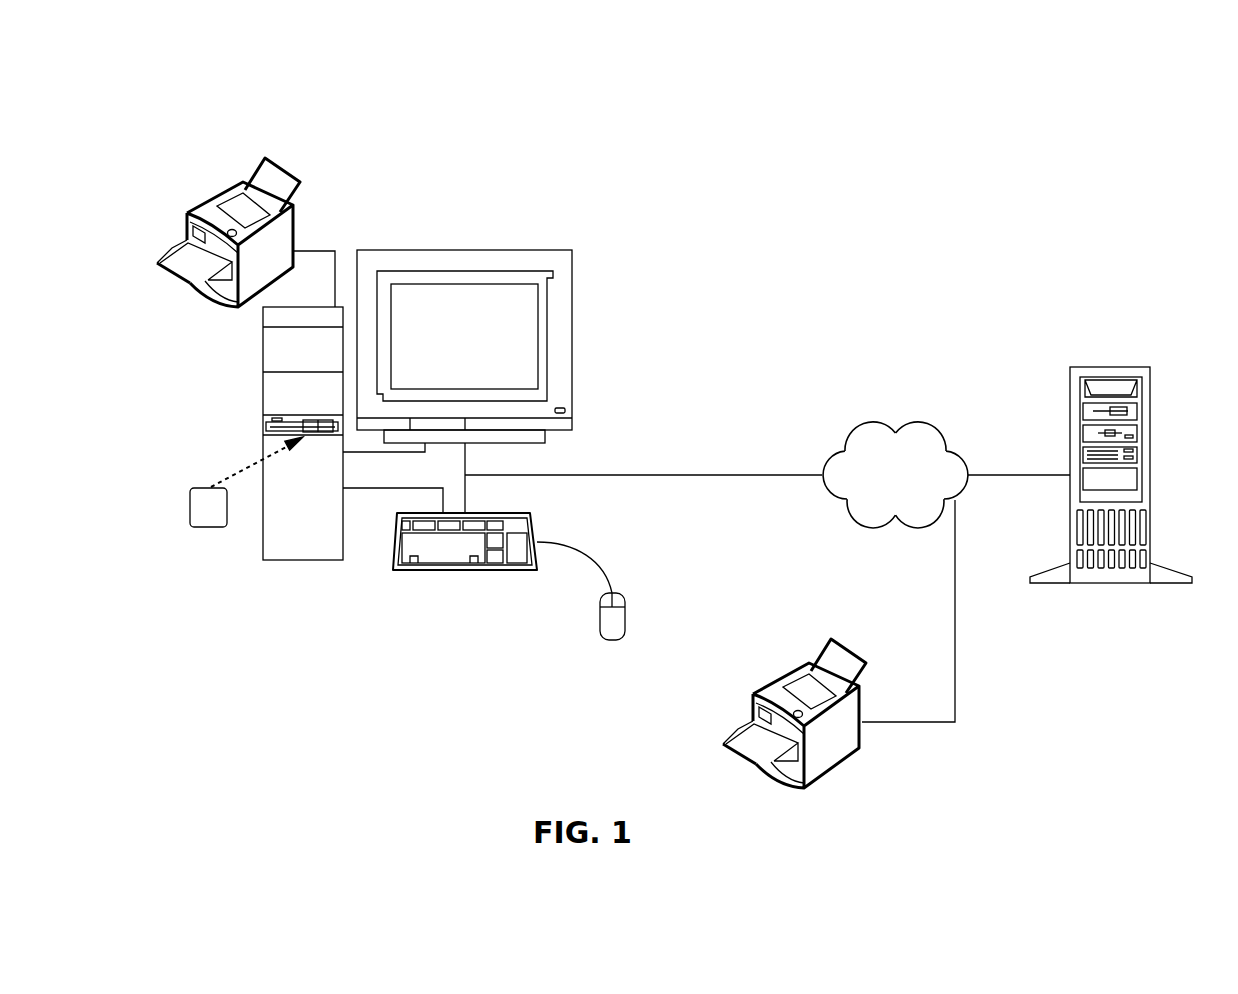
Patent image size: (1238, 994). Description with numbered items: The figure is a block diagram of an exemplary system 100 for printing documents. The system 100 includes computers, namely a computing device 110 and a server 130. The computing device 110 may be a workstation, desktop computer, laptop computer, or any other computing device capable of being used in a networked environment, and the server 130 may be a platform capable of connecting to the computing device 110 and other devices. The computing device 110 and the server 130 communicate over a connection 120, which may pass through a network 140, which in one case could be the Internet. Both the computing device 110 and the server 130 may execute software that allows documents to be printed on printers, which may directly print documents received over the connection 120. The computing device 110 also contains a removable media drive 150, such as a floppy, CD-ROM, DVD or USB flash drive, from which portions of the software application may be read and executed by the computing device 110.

The system 100 is at (315, 79).
The computing device 110 is at (464, 243).
The connection 120 is at (643, 463).
The server 130 is at (1110, 360).
The network 140 is at (915, 491).
The removable media drive 150 is at (246, 497).